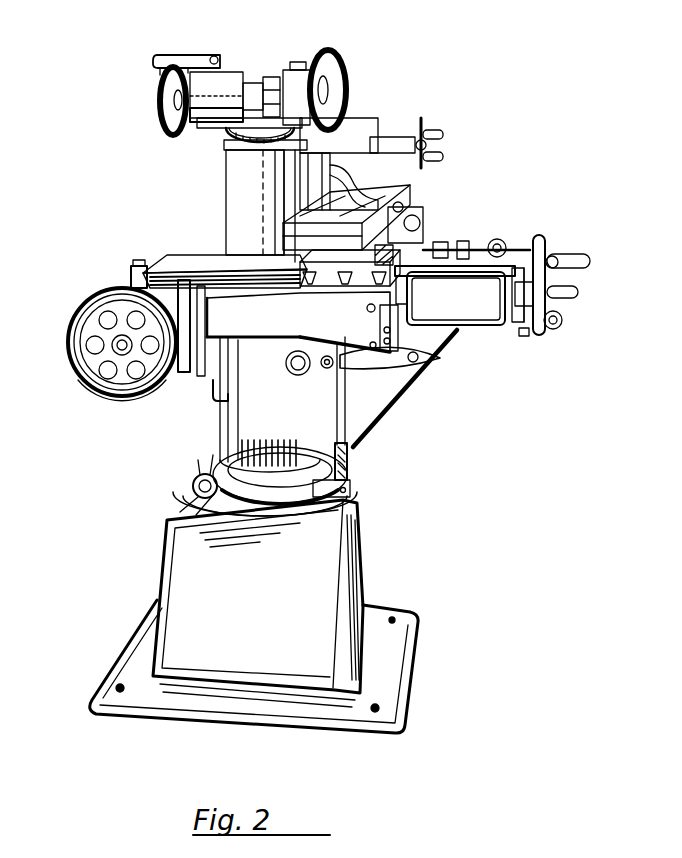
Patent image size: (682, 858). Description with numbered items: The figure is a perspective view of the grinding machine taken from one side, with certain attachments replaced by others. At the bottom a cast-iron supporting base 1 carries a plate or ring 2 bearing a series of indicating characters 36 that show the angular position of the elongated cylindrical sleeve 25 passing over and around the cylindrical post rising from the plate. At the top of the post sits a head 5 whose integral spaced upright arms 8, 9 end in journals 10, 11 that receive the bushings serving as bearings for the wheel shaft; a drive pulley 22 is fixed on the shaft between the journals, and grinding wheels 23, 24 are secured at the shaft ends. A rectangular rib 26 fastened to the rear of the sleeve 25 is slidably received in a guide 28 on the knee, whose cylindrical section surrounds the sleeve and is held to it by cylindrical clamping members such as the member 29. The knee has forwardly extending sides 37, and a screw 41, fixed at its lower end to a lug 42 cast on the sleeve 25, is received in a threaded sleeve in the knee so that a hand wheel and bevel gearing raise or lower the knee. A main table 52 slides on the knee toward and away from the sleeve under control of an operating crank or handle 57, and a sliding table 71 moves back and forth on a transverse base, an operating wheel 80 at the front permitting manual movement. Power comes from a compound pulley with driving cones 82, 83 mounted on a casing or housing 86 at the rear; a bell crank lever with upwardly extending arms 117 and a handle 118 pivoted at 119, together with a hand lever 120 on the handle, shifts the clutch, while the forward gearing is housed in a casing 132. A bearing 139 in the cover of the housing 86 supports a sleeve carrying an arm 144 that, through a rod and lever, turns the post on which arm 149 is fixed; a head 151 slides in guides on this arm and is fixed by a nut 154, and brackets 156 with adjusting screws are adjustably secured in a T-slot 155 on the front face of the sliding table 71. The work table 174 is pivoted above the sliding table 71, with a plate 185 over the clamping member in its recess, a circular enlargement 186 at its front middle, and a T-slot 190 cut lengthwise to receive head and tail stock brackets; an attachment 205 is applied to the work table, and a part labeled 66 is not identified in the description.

The supporting base 1 is at (237, 640).
The plate or ring 2 is at (290, 530).
The head 5 is at (262, 143).
The upright arm 8 is at (318, 136).
The upright arm 9 is at (227, 135).
The journal 10 is at (300, 82).
The journal 11 is at (212, 88).
The drive pulley 22 is at (270, 77).
The grinding wheel 23 is at (345, 120).
The grinding wheel 24 is at (170, 135).
The elongated cylindrical sleeve 25 is at (193, 513).
The rib 26 is at (208, 447).
The guide 28 is at (200, 380).
The clamping member 29 is at (298, 378).
The indicating characters 36 is at (237, 520).
The sides 37 is at (352, 388).
The screw 41 is at (348, 461).
The lug 42 is at (351, 489).
The main table 52 is at (477, 287).
The operating crank or handle 57 is at (561, 309).
The feed screw bearing 66 is at (527, 336).
The sliding table 71 is at (290, 257).
The operating wheel 80 is at (530, 333).
The driving cone 82 is at (123, 410).
The driving cone 83 is at (97, 398).
The casing or housing 86 is at (157, 403).
The arms 117 is at (326, 370).
The handle 118 is at (437, 360).
The pivot 119 is at (345, 388).
The hand lever 120 is at (413, 362).
The casing 132 is at (303, 310).
The bearing 139 is at (118, 290).
The arm 144 is at (131, 278).
The arm 149 is at (485, 240).
The head 151 is at (455, 256).
The nut 154 is at (448, 256).
The T-slot 155 is at (398, 308).
The brackets 156 is at (408, 285).
The work table 174 is at (407, 193).
The plate 185 is at (407, 203).
The circular enlargement 186 is at (344, 267).
The T-slot 190 is at (283, 233).
The attachment 205 is at (378, 184).